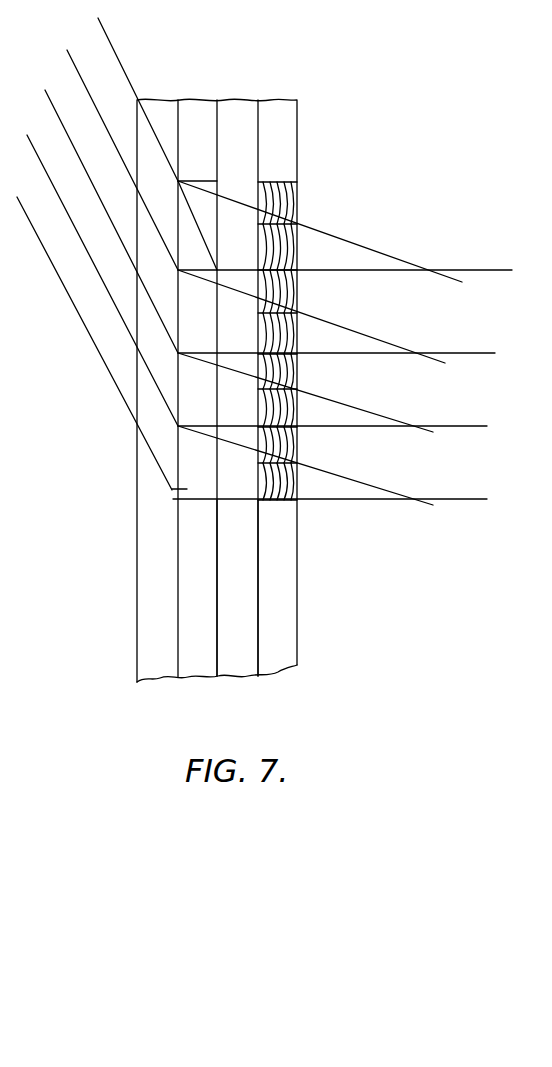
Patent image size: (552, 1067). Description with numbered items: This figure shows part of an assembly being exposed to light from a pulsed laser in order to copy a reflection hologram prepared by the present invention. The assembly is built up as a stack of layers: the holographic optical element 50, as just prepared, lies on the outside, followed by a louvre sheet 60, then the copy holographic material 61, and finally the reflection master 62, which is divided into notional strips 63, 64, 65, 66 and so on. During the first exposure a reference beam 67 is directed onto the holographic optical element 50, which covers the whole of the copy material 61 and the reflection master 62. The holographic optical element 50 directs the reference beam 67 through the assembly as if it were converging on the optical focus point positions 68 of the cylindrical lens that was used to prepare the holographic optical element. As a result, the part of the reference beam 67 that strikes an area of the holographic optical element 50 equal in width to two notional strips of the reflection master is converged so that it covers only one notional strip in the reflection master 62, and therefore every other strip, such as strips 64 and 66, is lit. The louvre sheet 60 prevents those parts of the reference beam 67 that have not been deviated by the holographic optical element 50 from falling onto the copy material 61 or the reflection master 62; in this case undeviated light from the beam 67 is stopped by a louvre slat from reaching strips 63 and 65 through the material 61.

The holographic optical element 50 is at (143, 473).
The louvre sheet 60 is at (172, 490).
The copy holographic material 61 is at (243, 533).
The reflection master 62 is at (279, 574).
The notional strip 63 is at (290, 192).
The notional strip 64 is at (290, 250).
The notional strip 65 is at (290, 293).
The notional strip 66 is at (290, 335).
The reference beam 67 is at (90, 97).
The optical focus point positions 68 is at (437, 270).